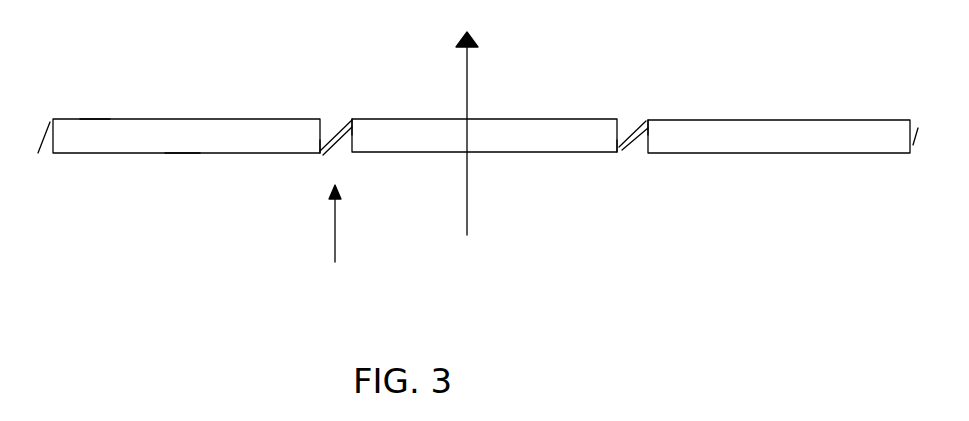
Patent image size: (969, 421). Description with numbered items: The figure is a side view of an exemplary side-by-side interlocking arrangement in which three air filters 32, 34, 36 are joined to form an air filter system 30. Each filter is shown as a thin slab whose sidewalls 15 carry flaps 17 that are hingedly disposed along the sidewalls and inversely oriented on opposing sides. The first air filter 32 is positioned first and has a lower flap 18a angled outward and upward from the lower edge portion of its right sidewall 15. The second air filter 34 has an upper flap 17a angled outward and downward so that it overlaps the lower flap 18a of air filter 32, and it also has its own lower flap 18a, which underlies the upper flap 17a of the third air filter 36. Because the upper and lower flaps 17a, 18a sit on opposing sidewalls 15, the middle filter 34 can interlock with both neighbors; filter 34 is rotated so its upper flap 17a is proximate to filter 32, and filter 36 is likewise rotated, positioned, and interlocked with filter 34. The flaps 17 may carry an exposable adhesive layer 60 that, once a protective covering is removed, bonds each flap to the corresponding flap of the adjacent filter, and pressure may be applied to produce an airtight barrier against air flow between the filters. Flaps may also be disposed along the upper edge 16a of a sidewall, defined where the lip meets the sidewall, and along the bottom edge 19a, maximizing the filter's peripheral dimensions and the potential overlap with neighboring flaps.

The air filter system 30 is at (151, 266).
The first air filter 32 is at (193, 102).
The second air filter 34 is at (531, 112).
The third air filter 36 is at (776, 112).
The sidewall 15 is at (485, 124).
The upper edge 16a is at (93, 119).
The flap 17 is at (44, 130).
The upper flap 17a is at (340, 128).
The lower flap 18a is at (335, 143).
The bottom edge 19a is at (183, 153).
The exposable adhesive layer 60 is at (337, 140).